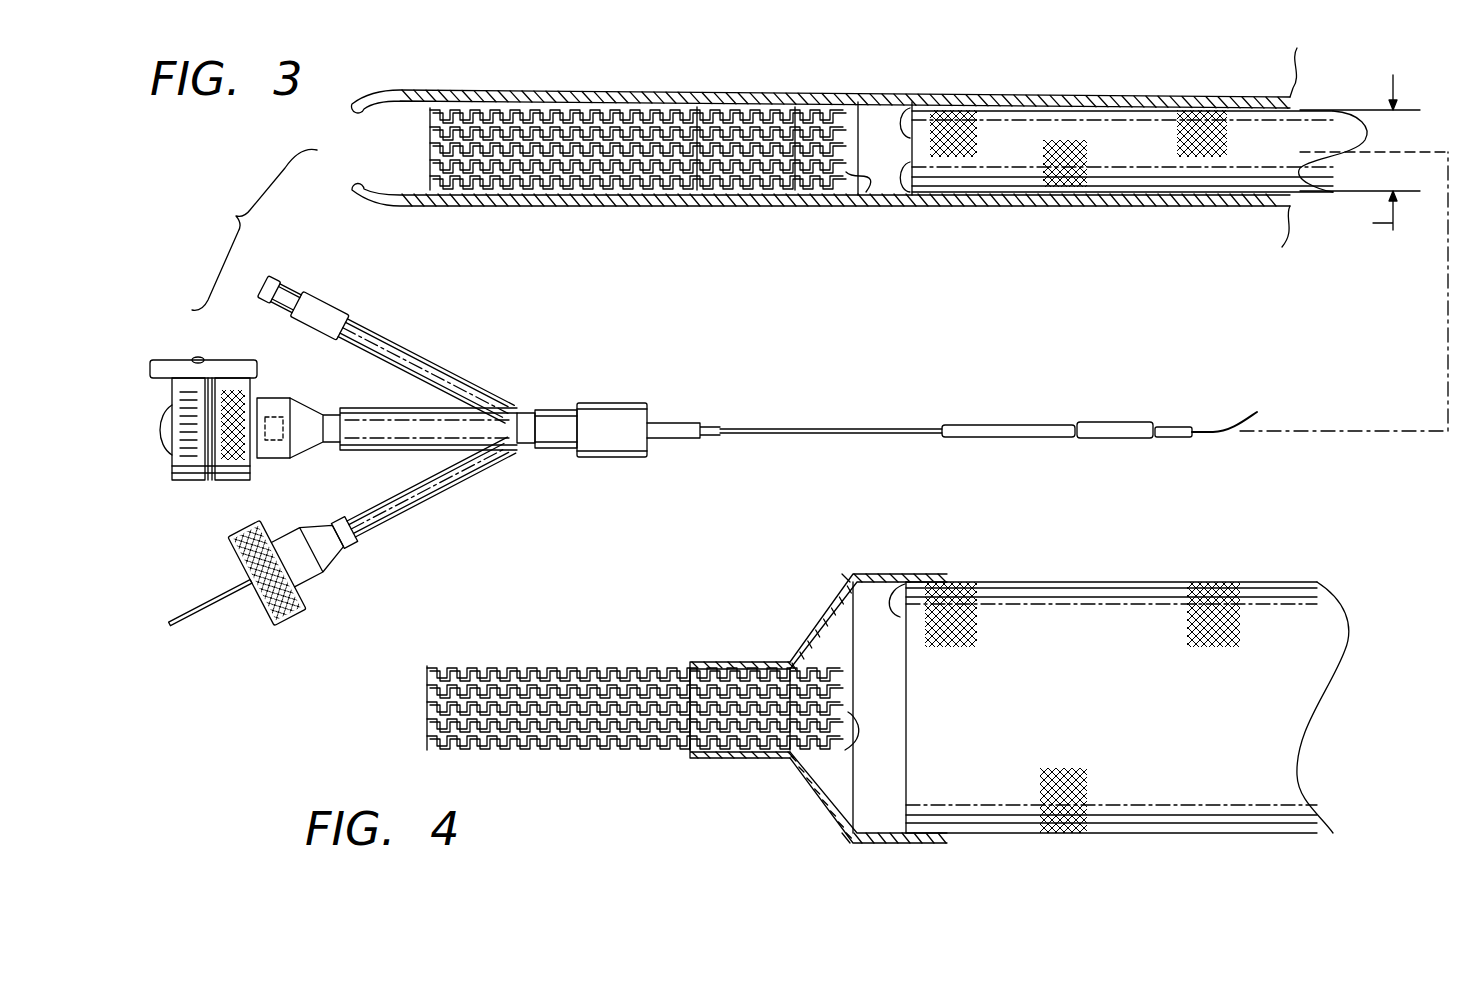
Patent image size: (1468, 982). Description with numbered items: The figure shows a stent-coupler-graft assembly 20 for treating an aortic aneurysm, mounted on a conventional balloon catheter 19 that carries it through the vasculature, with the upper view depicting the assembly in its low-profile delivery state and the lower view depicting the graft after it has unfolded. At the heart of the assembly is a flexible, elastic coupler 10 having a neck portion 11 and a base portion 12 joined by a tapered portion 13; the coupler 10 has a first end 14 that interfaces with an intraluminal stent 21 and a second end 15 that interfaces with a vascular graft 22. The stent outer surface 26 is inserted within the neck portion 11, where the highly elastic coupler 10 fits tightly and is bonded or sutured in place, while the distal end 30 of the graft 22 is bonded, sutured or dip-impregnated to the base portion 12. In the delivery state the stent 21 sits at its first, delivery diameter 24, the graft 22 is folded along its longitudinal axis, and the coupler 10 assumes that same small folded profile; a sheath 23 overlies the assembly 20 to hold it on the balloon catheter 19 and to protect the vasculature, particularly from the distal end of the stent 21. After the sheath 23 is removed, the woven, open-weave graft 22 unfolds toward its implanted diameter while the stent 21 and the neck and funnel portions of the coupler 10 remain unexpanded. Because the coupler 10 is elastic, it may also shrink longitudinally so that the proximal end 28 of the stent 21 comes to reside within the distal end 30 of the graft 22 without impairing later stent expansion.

In FIG. 3, the coupler 10 is at (828, 233).
In FIG. 4, the coupler 10 is at (814, 678).
In FIG. 3, the neck portion 11 is at (825, 164).
In FIG. 4, the neck portion 11 is at (745, 660).
In FIG. 3, the base portion 12 is at (880, 100).
In FIG. 4, the base portion 12 is at (873, 574).
In FIG. 4, the tapered portion 13 is at (820, 608).
In FIG. 3, the first end 14 is at (678, 108).
In FIG. 4, the first end 14 is at (675, 685).
In FIG. 3, the second end 15 is at (952, 107).
In FIG. 4, the second end 15 is at (950, 580).
In FIG. 3, the balloon catheter 19 is at (842, 404).
In FIG. 3, the stent-coupler-graft assembly 20 is at (638, 150).
In FIG. 4, the stent-coupler-graft assembly 20 is at (635, 687).
In FIG. 3, the intraluminal stent 21 is at (580, 187).
In FIG. 4, the intraluminal stent 21 is at (577, 670).
In FIG. 3, the vascular graft 22 is at (1172, 178).
In FIG. 4, the vascular graft 22 is at (1148, 580).
In FIG. 3, the sheath 23 is at (1083, 95).
In FIG. 3, the first, delivery diameter 24 is at (1360, 156).
In FIG. 3, the stent outer surface 26 is at (737, 192).
In FIG. 4, the stent outer surface 26 is at (715, 747).
In FIG. 3, the proximal end 28 is at (866, 192).
In FIG. 4, the proximal end 28 is at (845, 750).
In FIG. 3, the distal end 30 is at (905, 125).
In FIG. 4, the distal end 30 is at (888, 608).